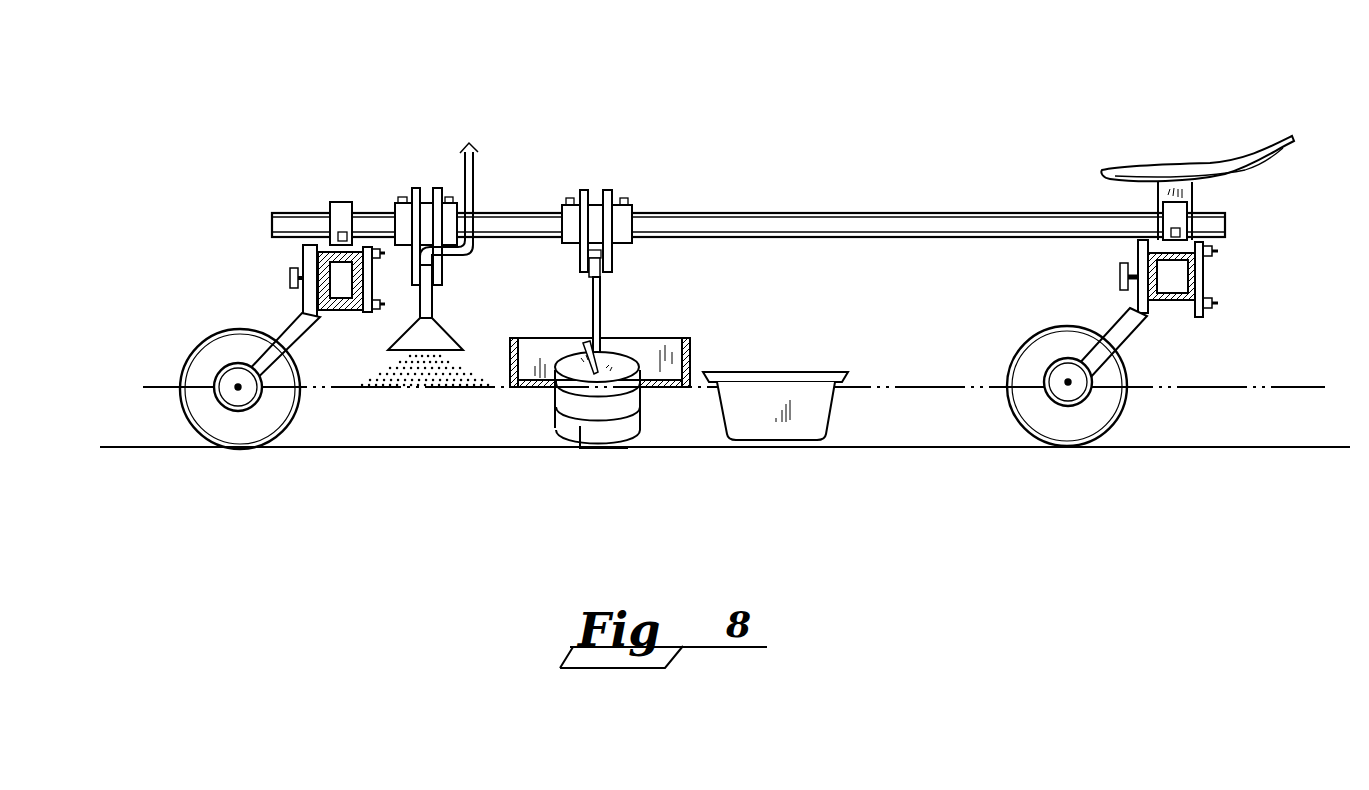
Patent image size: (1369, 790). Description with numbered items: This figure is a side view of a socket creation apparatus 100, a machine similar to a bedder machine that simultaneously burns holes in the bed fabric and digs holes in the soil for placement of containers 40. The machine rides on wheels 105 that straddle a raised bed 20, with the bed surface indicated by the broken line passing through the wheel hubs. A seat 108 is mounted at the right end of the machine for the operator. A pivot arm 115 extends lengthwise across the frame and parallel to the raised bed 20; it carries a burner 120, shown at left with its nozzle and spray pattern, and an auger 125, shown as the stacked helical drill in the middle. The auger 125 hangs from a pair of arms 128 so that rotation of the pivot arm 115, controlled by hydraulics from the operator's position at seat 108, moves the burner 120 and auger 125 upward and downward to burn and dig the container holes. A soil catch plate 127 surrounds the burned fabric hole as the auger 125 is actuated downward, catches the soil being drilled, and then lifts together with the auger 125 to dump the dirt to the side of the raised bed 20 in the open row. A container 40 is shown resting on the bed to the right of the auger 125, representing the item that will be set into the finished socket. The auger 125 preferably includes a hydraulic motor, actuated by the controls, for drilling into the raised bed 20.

The socket creation apparatus 100 is at (702, 285).
The seat 108 is at (1153, 167).
The pivot arm 115 is at (887, 222).
The burner 120 is at (448, 335).
The arms 128 is at (601, 298).
The soil catch plate 127 is at (670, 340).
The auger 125 is at (632, 448).
The container 40 is at (810, 372).
The raised bed 20 is at (948, 387).
The wheels 105 is at (1093, 423).